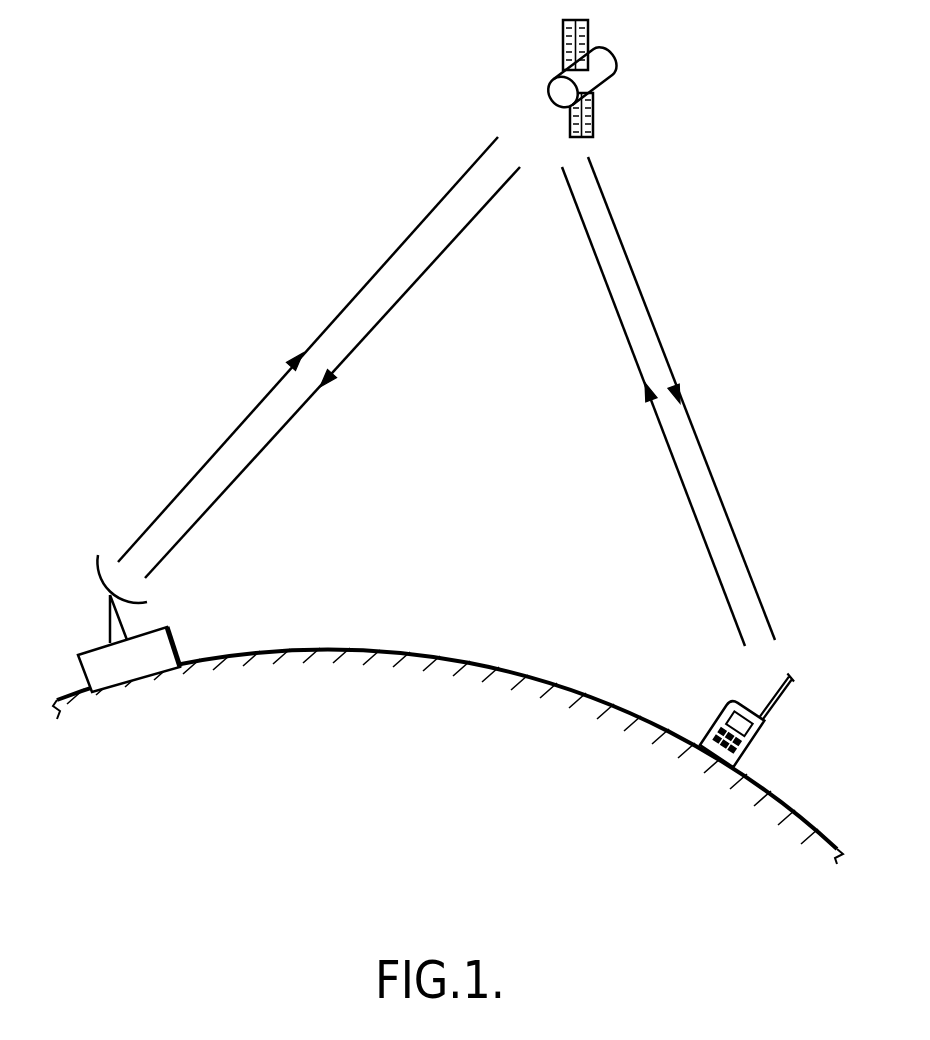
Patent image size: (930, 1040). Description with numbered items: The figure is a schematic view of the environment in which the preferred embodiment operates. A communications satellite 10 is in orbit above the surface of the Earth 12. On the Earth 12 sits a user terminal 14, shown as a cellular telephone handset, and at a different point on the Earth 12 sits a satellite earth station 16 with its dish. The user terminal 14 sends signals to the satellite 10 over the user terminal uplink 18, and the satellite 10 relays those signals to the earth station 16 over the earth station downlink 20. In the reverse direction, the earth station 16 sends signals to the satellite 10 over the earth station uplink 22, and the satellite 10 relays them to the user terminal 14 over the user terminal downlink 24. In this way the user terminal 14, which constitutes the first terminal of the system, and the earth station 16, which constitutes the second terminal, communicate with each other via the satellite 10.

The communications satellite 10 is at (608, 75).
The surface of the Earth 12 is at (793, 810).
The user terminal 14 is at (765, 722).
The satellite earth station 16 is at (160, 645).
The user terminal uplink 18 is at (677, 473).
The earth station downlink 20 is at (285, 425).
The earth station uplink 22 is at (315, 343).
The user terminal downlink 24 is at (697, 430).